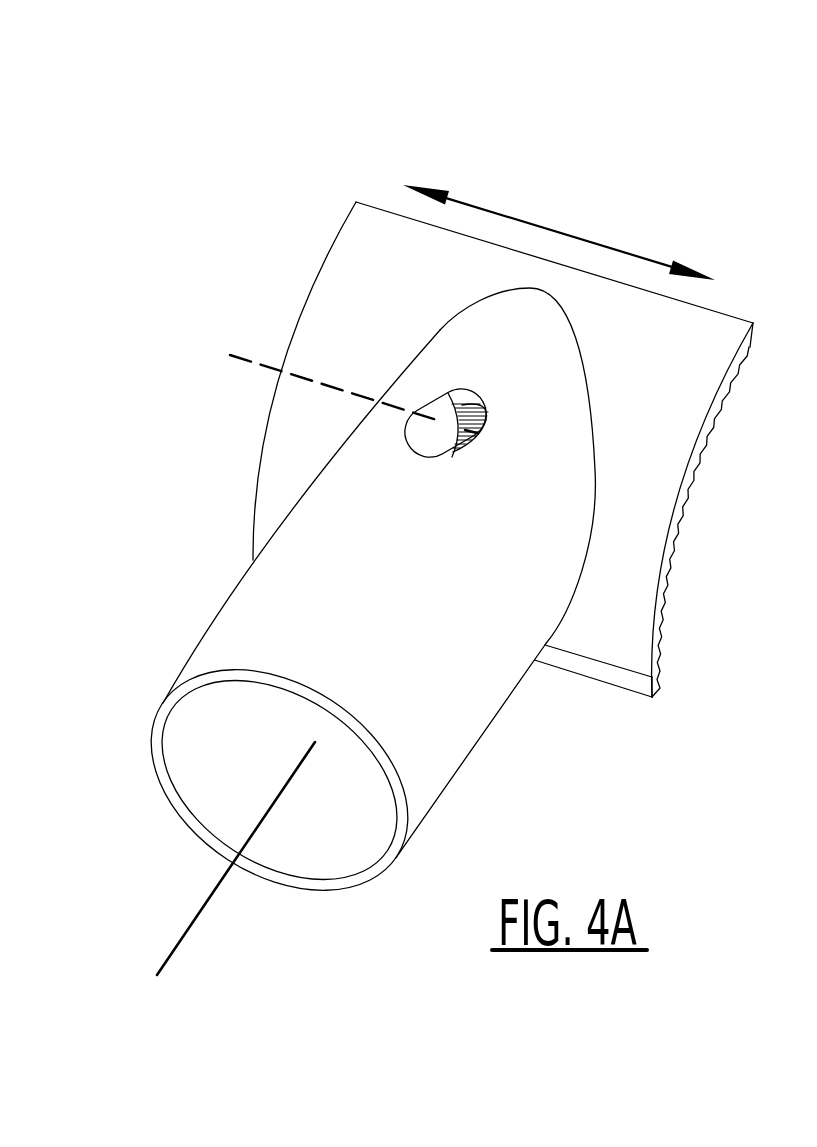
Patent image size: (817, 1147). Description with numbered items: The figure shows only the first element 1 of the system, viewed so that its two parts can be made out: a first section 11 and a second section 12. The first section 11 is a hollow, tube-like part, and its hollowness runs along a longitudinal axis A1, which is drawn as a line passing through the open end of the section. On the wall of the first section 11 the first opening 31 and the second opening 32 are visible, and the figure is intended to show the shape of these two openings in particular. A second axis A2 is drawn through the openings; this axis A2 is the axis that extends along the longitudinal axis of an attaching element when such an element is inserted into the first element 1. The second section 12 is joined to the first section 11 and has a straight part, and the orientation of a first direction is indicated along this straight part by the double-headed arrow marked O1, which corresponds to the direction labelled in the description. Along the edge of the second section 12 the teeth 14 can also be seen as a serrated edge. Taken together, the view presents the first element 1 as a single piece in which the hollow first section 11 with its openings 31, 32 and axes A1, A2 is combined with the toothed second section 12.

The first element 1 is at (328, 130).
The first section 11 is at (462, 710).
The second section 12 is at (710, 348).
The teeth 14 is at (712, 571).
The first opening 31 is at (413, 384).
The second opening 32 is at (460, 497).
The longitudinal axis A1 is at (222, 858).
The axis A2 is at (330, 382).
The orientation direction O1 is at (559, 227).